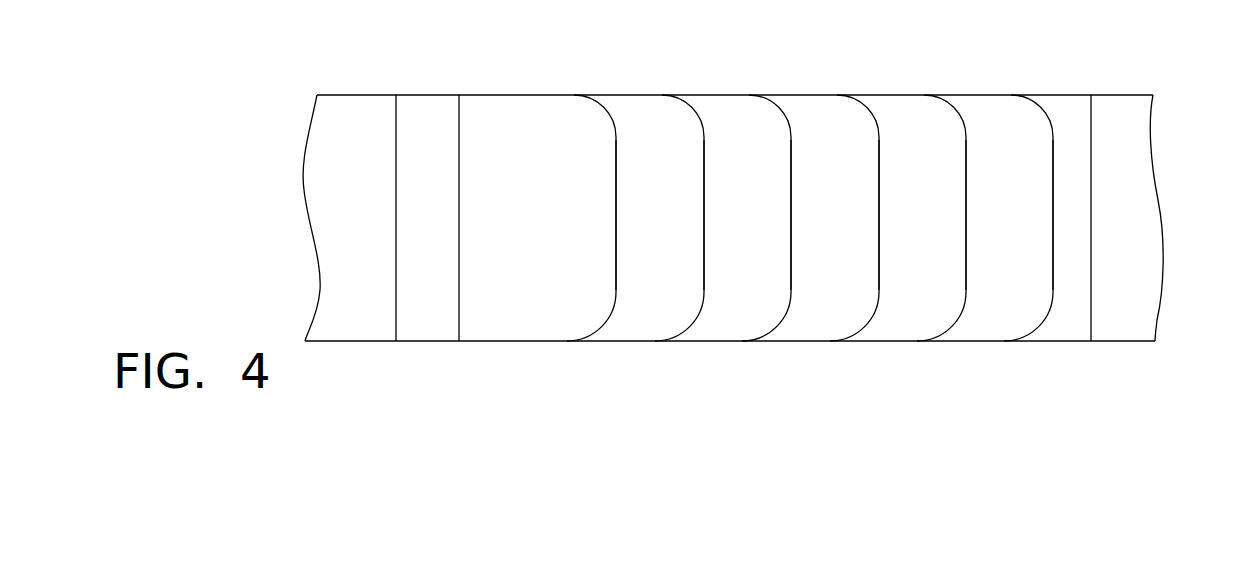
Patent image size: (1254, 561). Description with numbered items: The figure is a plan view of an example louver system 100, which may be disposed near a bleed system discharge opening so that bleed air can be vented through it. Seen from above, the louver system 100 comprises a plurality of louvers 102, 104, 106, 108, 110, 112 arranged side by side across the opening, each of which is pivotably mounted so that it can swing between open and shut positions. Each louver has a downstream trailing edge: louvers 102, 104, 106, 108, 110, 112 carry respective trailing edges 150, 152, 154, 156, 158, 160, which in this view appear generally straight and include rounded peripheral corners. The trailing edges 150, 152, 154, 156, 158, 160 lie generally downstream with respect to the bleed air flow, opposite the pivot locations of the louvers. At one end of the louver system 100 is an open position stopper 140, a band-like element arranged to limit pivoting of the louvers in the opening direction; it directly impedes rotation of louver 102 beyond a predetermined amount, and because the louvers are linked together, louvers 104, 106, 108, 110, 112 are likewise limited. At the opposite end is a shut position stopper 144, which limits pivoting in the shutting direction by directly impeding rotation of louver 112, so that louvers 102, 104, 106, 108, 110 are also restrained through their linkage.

The louver system 100 is at (369, 54).
The open position stopper 140 is at (423, 122).
The shut position stopper 144 is at (1075, 193).
The louver 102 is at (515, 324).
The louver 104 is at (647, 324).
The louver 106 is at (734, 324).
The louver 108 is at (822, 324).
The louver 110 is at (909, 324).
The louver 112 is at (996, 324).
The trailing edge 150 is at (632, 154).
The trailing edge 152 is at (720, 154).
The trailing edge 154 is at (807, 154).
The trailing edge 156 is at (895, 154).
The trailing edge 158 is at (982, 154).
The trailing edge 160 is at (1069, 154).